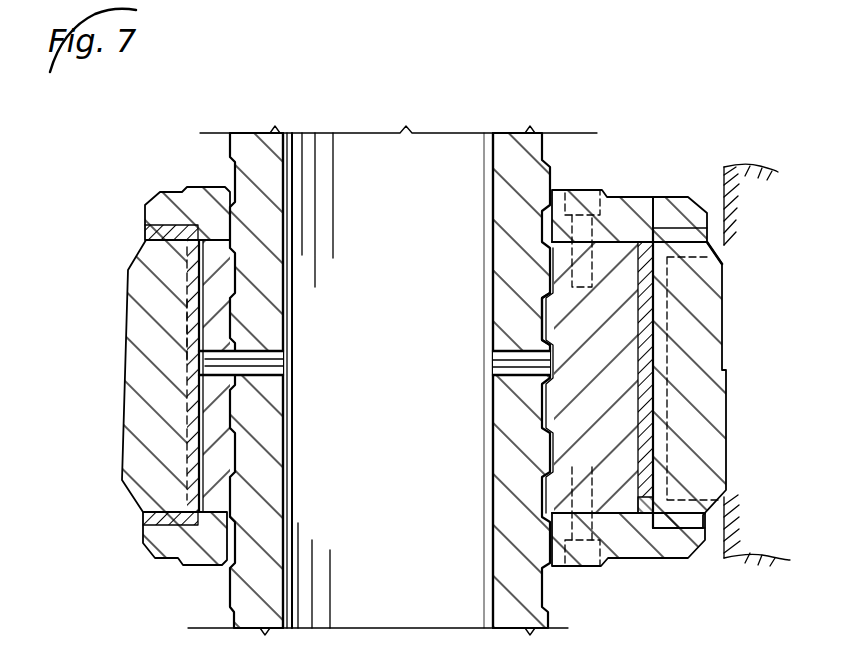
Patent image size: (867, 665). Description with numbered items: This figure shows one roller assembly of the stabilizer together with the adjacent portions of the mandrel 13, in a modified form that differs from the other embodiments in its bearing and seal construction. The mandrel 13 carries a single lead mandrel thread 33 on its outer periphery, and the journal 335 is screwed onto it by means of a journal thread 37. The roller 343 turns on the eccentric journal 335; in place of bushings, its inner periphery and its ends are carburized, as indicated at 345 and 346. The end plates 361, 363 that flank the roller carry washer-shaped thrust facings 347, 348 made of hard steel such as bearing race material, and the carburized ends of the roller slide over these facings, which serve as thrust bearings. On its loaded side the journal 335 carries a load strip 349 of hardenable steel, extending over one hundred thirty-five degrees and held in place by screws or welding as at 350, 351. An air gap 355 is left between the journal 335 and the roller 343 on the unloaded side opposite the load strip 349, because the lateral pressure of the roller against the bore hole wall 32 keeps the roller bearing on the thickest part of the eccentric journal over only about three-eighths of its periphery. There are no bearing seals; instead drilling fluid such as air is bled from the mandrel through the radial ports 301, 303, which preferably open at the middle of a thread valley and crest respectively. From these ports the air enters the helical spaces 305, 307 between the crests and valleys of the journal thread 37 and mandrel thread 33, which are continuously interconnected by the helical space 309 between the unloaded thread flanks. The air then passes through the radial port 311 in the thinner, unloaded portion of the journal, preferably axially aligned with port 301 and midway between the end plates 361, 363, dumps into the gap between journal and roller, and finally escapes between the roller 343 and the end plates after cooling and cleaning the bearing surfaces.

The mandrel portion 13 is at (505, 162).
The mandrel thread 33 is at (553, 178).
The wall of the bore hole 32 is at (722, 185).
The journal thread 37 is at (545, 315).
The radial port 303 is at (494, 360).
The radial port 301 is at (283, 363).
The helical space 305 is at (270, 350).
The helical space 307 is at (228, 407).
The helical space 309 is at (228, 480).
The radial port 311 is at (199, 373).
The roller 343 is at (130, 400).
The carburized inner periphery 345 is at (187, 331).
The carburized ends 346 is at (187, 247).
The thrust facing 347 is at (145, 232).
The thrust facing 348 is at (143, 520).
The air gap 355 is at (196, 460).
The weld 350 is at (650, 240).
The end plate 361 is at (657, 197).
The end plate 363 is at (653, 563).
The journal 335 is at (636, 330).
The load strip 349 is at (648, 348).
The weld 351 is at (648, 510).